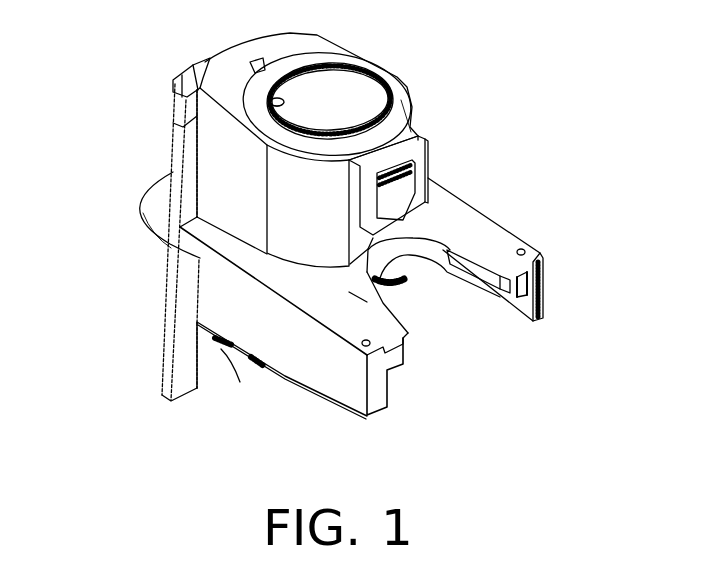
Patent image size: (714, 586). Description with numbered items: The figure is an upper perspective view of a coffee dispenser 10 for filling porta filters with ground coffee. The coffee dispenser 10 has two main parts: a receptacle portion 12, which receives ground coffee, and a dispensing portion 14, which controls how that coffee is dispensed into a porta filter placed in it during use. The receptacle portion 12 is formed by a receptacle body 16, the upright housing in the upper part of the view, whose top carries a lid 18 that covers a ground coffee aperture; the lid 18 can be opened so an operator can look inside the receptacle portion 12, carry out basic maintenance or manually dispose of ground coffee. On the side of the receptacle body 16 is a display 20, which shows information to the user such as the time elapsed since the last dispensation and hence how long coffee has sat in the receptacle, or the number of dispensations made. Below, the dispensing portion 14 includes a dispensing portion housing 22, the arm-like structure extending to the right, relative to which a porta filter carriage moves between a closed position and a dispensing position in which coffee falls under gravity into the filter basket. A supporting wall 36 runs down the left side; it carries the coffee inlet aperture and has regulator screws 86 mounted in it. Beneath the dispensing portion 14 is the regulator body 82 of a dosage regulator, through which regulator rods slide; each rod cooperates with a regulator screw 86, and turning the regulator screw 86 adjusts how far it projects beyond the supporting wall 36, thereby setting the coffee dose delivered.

The coffee dispenser 10 is at (510, 80).
The receptacle portion 12 is at (196, 76).
The dispensing portion 14 is at (205, 300).
The receptacle body 16 is at (228, 146).
The lid 18 is at (353, 91).
The display 20 is at (425, 160).
The dispensing portion housing 22 is at (500, 248).
The supporting wall 36 is at (160, 390).
The regulator body 82 is at (249, 365).
The regulator screw 86 is at (218, 347).